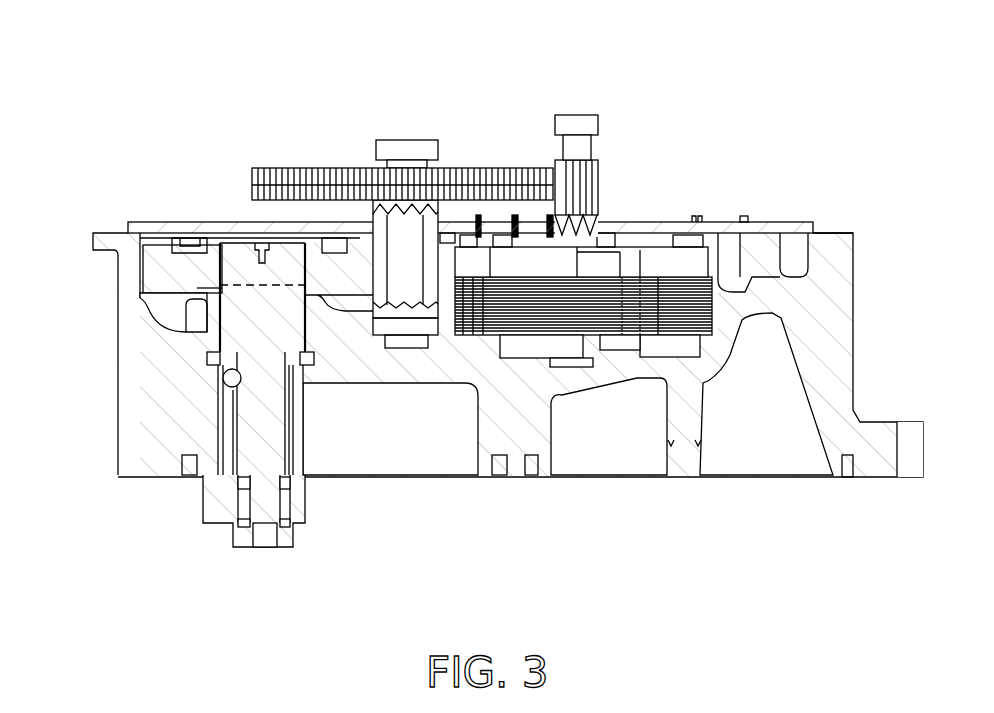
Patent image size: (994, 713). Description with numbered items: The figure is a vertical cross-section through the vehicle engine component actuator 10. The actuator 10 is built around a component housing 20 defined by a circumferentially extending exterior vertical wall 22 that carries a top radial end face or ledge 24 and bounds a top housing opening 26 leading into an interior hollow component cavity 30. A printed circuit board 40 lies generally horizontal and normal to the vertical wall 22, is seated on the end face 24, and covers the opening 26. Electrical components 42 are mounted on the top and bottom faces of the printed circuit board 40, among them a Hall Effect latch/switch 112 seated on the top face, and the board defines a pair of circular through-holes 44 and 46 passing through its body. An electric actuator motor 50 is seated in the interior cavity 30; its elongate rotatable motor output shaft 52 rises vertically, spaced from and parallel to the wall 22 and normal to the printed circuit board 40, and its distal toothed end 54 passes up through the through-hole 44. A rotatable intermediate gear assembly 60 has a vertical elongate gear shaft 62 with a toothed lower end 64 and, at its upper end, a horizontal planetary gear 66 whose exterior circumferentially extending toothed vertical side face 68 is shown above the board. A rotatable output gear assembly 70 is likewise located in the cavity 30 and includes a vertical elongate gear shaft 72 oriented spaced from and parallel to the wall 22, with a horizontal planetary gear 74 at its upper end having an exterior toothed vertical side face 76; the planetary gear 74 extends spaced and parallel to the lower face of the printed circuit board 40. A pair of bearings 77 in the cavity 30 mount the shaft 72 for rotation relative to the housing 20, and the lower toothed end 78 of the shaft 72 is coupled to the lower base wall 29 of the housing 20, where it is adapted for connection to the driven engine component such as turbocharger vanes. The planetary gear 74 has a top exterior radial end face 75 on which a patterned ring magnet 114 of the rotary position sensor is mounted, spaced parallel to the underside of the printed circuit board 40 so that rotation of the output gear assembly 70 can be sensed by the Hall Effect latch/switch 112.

The vehicle engine component actuator 10 is at (468, 283).
The component housing 20 is at (853, 290).
The exterior vertical wall 22 is at (123, 380).
The radial end face 24 is at (104, 233).
The top housing opening 26 is at (815, 233).
The lower base wall 29 is at (358, 477).
The interior hollow component cavity 30 is at (725, 297).
The printed circuit board 40 is at (785, 227).
The electrical components 42 is at (745, 222).
The through-hole 44 is at (615, 215).
The through-hole 46 is at (449, 105).
The electric actuator motor 50 is at (671, 268).
The motor output shaft 52 is at (580, 145).
The distal toothed end 54 is at (590, 183).
The intermediate gear assembly 60 is at (425, 135).
The gear shaft 62 is at (420, 114).
The toothed lower end 64 is at (468, 188).
The planetary gear 66 is at (447, 228).
The toothed vertical side face 68 is at (513, 165).
The output gear assembly 70 is at (140, 277).
The gear shaft 72 is at (248, 330).
The planetary gear 74 is at (167, 270).
The top exterior radial end face 75 is at (157, 242).
The toothed vertical side face 76 is at (380, 270).
The bearings 77 is at (352, 238).
The lower toothed end 78 is at (297, 425).
The Hall Effect latch/switch 112 is at (333, 216).
The patterned ring magnet 114 is at (192, 243).